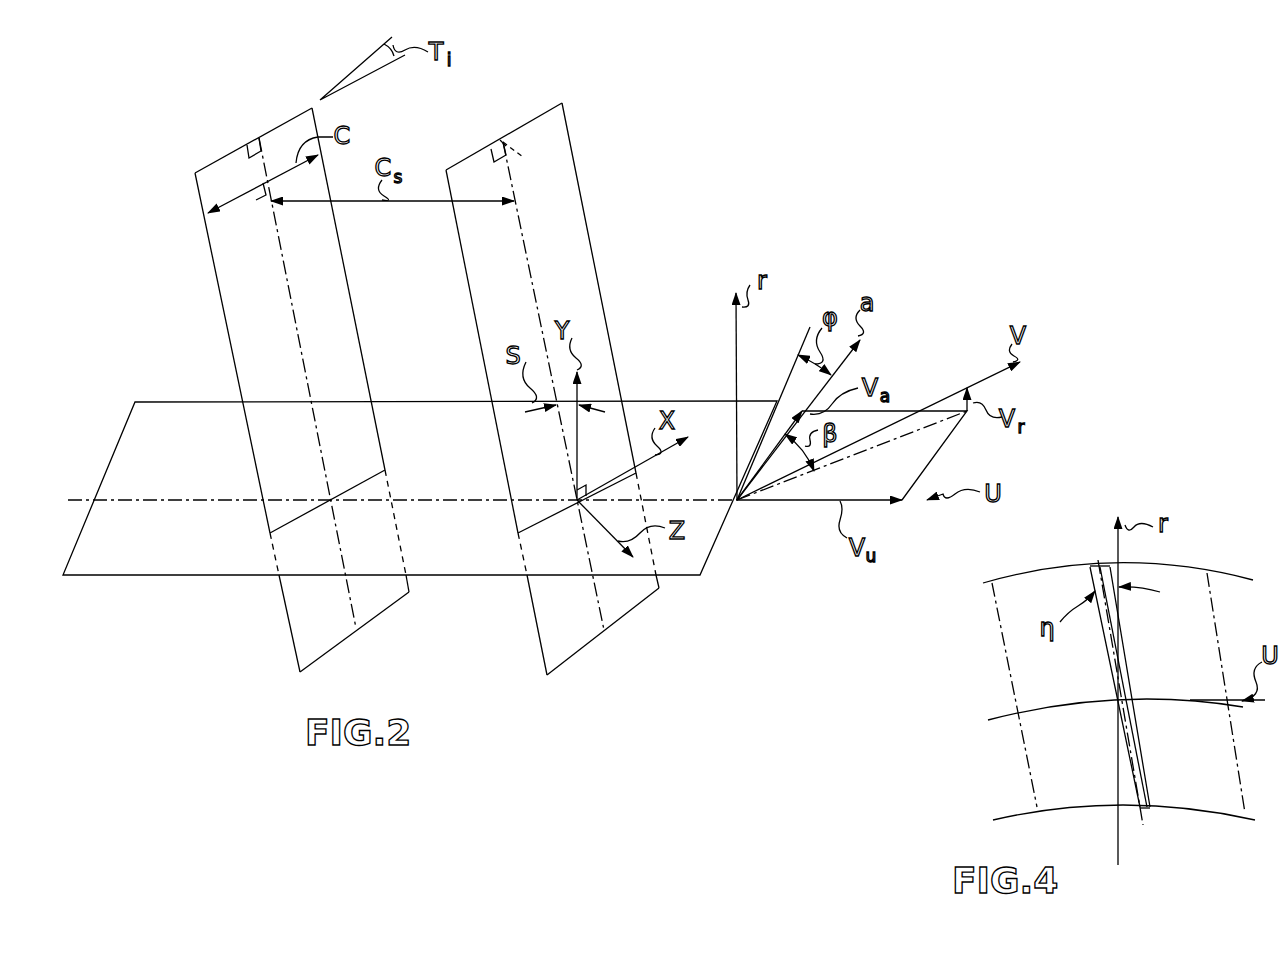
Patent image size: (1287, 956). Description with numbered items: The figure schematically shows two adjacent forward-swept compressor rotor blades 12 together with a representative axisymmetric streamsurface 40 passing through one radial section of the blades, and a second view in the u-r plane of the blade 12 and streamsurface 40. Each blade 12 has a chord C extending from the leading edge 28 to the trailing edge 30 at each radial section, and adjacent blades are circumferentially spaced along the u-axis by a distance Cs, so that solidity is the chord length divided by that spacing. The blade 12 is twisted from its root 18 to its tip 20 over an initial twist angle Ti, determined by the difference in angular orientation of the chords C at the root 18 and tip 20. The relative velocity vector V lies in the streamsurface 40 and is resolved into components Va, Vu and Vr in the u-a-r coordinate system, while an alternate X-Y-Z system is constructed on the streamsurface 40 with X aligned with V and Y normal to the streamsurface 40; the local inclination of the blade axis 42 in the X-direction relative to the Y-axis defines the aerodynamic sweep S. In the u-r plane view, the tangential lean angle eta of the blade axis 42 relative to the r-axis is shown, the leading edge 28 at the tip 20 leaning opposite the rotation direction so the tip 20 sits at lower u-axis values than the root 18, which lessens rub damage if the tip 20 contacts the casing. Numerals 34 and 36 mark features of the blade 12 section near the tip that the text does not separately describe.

In FIG. 2, the rotor blade 12 is at (425, 358).
In FIG. 4, the rotor blade 12 is at (1113, 691).
In FIG. 2, the blade root 18 is at (367, 623).
In FIG. 4, the blade root 18 is at (1143, 817).
In FIG. 2, the blade tip 20 is at (280, 124).
In FIG. 4, the blade tip 20 is at (1089, 564).
In FIG. 2, the leading edge 28 is at (476, 322).
In FIG. 4, the leading edge 28 is at (1106, 656).
In FIG. 2, the trailing edge 30 is at (607, 327).
In FIG. 2, the chord line 34 is at (535, 150).
In FIG. 2, the tip section center point 36 is at (500, 140).
In FIG. 2, the axisymmetric streamsurface 40 is at (137, 578).
In FIG. 4, the axisymmetric streamsurface 40 is at (1030, 710).
In FIG. 2, the blade axis 42 is at (289, 317).
In FIG. 4, the blade axis 42 is at (1092, 582).